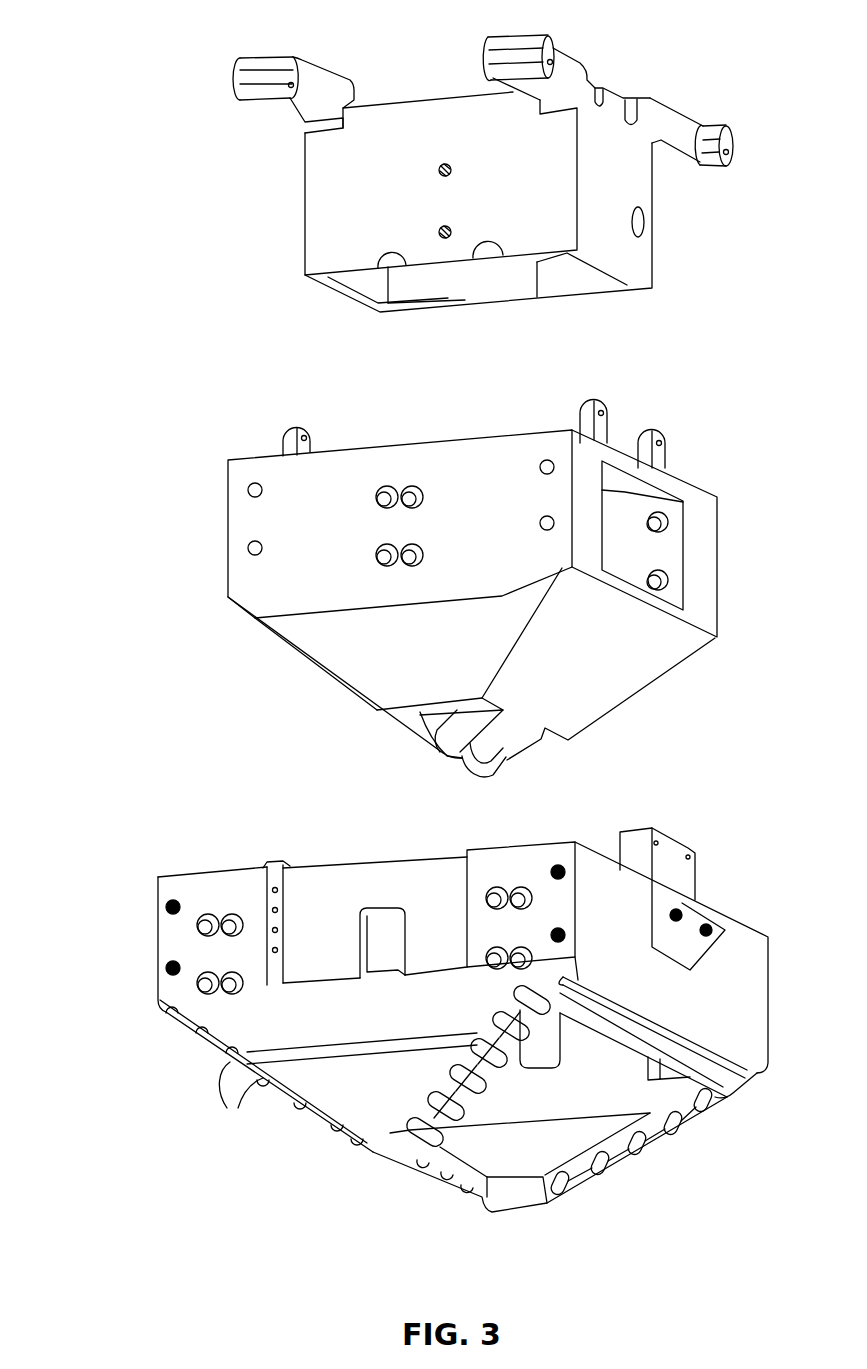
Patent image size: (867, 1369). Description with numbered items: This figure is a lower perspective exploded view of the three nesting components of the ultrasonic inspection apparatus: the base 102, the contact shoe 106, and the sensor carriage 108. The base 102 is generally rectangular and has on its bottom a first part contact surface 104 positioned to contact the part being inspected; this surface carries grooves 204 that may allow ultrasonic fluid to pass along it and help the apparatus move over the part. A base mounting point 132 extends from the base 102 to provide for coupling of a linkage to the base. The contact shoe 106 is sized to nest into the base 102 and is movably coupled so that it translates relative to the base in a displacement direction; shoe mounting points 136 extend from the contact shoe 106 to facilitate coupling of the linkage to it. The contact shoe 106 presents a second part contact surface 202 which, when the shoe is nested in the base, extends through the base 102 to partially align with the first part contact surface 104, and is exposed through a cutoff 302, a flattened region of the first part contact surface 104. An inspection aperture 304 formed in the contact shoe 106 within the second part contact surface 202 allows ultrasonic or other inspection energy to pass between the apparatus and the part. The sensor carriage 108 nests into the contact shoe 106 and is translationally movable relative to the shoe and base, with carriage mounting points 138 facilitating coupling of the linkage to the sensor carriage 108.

The base 102 is at (408, 1033).
The first part contact surface 104 is at (243, 1076).
The contact shoe 106 is at (405, 585).
The sensor carriage 108 is at (452, 156).
The base mounting point 132 is at (679, 884).
The shoe mounting points 136 is at (474, 412).
The carriage mounting points 138 is at (486, 83).
The second part contact surface 202 is at (423, 750).
The grooves 204 is at (264, 1076).
The cutoff 302 is at (550, 1176).
The inspection aperture 304 is at (445, 778).